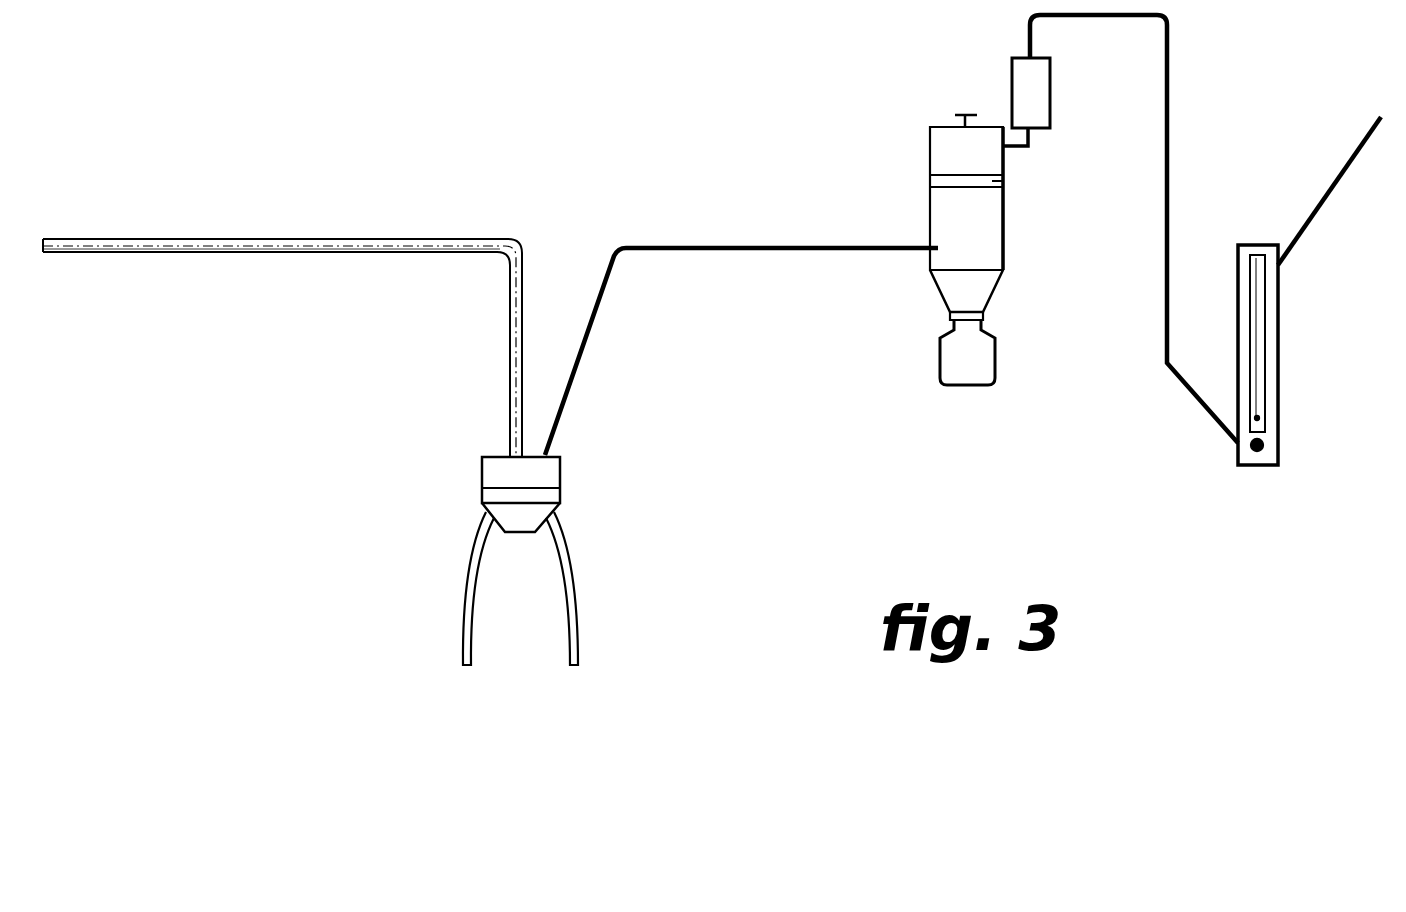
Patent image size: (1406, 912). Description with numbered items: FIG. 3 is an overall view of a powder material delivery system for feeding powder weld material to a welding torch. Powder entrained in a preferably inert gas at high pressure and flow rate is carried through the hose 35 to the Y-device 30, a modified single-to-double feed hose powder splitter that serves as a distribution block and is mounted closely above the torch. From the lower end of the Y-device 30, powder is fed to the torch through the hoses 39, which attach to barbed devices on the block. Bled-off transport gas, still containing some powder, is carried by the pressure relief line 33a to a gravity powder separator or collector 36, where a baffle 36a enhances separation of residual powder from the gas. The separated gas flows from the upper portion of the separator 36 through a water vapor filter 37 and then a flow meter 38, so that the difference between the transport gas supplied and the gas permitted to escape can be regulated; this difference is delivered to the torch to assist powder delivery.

The Y-device 30 is at (560, 470).
The pressure relief line 33a is at (693, 243).
The hose 35 is at (397, 237).
The gravity powder separator or collector 36 is at (1003, 220).
The baffle 36a is at (1003, 181).
The water vapor filter 37 is at (1050, 82).
The flow meter 38 is at (1278, 310).
The hose 39 is at (575, 572).